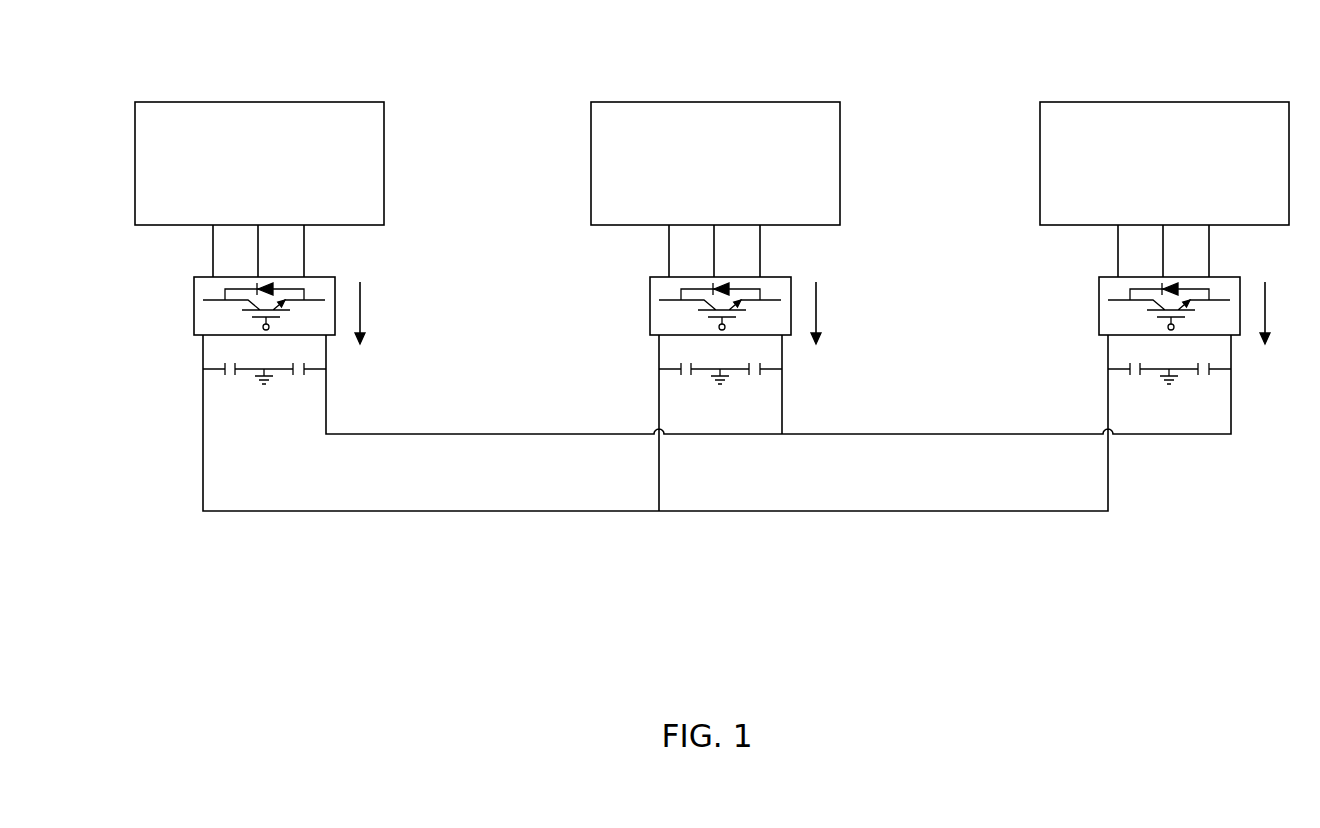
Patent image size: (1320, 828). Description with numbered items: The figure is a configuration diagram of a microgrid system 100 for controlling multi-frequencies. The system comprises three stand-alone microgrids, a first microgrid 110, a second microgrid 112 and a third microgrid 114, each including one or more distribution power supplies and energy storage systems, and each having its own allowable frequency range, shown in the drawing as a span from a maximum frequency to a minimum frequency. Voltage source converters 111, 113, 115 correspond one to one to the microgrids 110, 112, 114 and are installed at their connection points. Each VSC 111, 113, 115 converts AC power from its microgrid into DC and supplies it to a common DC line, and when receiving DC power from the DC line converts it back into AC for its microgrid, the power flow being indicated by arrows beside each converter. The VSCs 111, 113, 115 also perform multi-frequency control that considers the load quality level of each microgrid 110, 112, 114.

The microgrid system 100 is at (730, 585).
The first microgrid 110 is at (258, 102).
The voltage source converter 111 is at (194, 328).
The second microgrid 112 is at (715, 164).
The voltage source converter 113 is at (715, 330).
The third microgrid 114 is at (1164, 164).
The voltage source converter 115 is at (1164, 330).